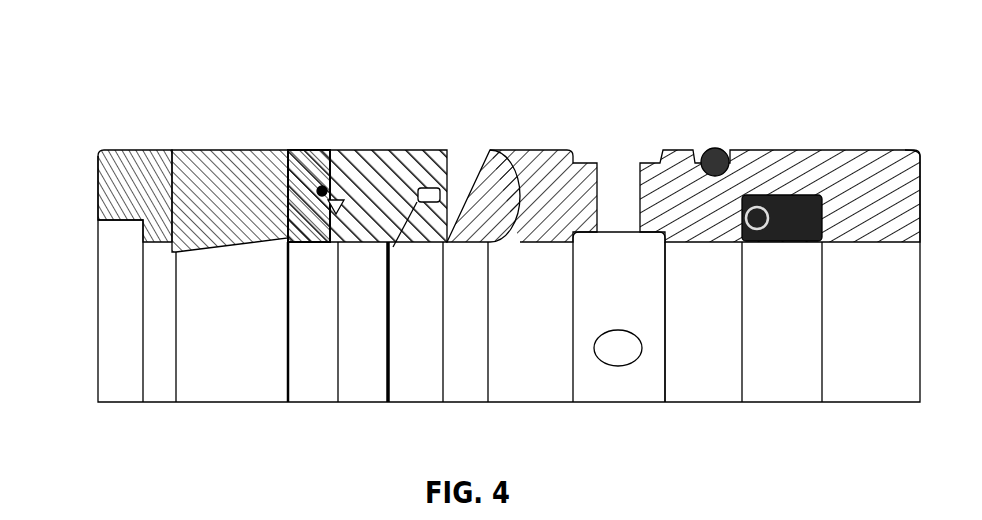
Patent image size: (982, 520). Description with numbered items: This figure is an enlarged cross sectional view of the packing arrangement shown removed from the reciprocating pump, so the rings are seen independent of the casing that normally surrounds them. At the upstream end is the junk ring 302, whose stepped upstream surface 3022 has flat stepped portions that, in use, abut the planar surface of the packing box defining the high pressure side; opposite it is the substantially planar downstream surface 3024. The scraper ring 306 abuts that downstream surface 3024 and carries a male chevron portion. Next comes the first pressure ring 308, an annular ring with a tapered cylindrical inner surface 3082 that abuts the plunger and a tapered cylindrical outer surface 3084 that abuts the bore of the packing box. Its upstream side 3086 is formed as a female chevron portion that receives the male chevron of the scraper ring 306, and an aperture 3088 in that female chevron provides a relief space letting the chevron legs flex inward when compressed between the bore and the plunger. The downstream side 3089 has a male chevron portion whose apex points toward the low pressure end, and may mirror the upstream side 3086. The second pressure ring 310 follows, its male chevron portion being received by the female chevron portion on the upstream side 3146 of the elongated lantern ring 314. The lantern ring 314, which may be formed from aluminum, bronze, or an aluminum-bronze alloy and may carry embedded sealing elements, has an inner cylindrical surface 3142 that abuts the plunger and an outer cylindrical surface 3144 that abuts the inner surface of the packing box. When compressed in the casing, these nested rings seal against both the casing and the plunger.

The junk ring 302 is at (123, 157).
The stepped upstream surface 3022 is at (99, 207).
The downstream surface 3024 is at (176, 325).
The scraper ring 306 is at (240, 157).
The first pressure ring 308 is at (375, 157).
The tapered cylindrical inner surface 3082 is at (340, 327).
The tapered cylindrical outer surface 3084 is at (325, 147).
The upstream side 3086 is at (316, 186).
The aperture 3088 is at (336, 196).
The downstream side 3089 is at (412, 177).
The second pressure ring 310 is at (468, 175).
The lantern ring 314 is at (863, 175).
The inner cylindrical surface 3142 is at (708, 323).
The outer cylindrical surface 3144 is at (795, 148).
The upstream side 3146 is at (520, 172).